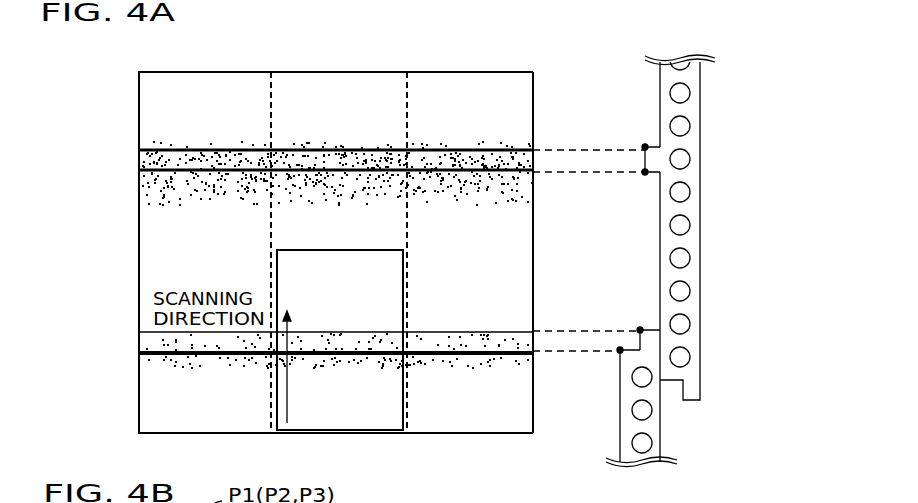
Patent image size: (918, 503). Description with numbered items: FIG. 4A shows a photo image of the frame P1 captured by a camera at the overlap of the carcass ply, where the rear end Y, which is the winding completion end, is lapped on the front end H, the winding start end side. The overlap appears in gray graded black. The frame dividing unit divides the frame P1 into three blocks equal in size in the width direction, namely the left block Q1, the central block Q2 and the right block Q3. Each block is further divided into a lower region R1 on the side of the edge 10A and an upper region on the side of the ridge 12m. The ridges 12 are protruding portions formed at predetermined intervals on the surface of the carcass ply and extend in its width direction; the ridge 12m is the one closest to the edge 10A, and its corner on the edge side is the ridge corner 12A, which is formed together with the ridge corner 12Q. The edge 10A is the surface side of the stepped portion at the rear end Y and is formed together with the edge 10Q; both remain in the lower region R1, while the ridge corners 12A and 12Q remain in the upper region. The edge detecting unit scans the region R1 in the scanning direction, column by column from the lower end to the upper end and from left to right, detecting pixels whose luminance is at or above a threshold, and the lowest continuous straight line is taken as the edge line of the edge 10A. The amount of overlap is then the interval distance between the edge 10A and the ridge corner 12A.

The frame P1 is at (181, 72).
The left block Q1 is at (190, 423).
The central block Q2 is at (352, 423).
The right block Q3 is at (469, 422).
The region R1 is at (390, 307).
The ridge 12 is at (625, 218).
The ridge 12m is at (643, 158).
The edge 10Q is at (645, 146).
The edge 10A is at (645, 173).
The ridge corner 12Q is at (640, 330).
The ridge corner 12A is at (620, 351).
The rear end Y is at (650, 329).
The front end H is at (688, 402).